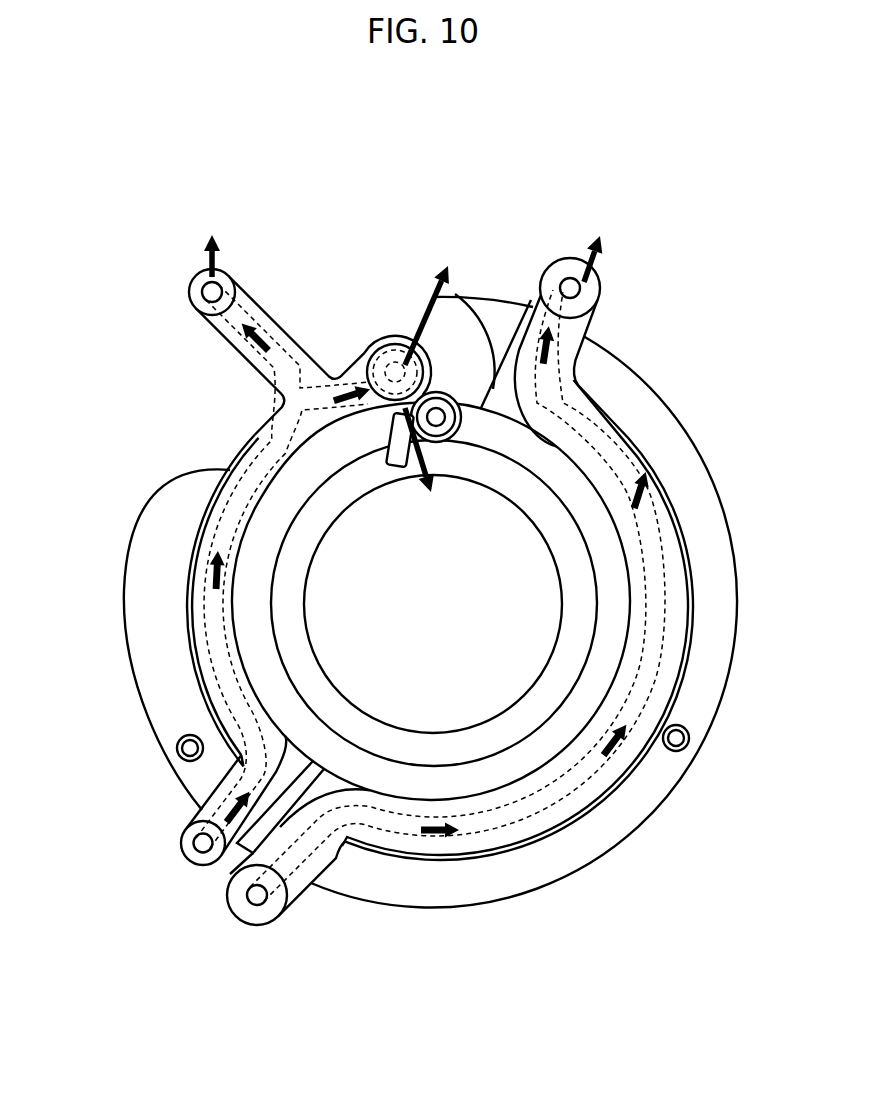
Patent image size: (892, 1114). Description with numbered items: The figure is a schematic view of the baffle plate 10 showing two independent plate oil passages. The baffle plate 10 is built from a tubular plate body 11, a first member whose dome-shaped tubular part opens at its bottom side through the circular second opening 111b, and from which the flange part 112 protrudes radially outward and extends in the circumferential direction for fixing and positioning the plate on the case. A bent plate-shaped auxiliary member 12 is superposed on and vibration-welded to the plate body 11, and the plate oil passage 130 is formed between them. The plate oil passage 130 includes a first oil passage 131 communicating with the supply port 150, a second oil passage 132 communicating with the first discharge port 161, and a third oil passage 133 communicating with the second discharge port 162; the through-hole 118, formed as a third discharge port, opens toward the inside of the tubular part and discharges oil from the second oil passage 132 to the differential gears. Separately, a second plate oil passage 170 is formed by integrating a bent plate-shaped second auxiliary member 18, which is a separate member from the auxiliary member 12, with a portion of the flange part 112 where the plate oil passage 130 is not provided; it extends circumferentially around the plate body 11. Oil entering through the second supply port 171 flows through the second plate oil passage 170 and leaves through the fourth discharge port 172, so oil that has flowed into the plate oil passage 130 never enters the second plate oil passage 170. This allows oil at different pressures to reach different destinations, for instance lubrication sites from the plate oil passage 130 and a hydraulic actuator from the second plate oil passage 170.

The baffle plate 10 is at (730, 290).
The plate body 11 is at (667, 390).
The auxiliary member 12 is at (247, 430).
The second auxiliary member 18 is at (692, 644).
The second opening 111b is at (505, 783).
The flange part 112 is at (678, 437).
The through-hole 118 is at (378, 398).
The plate oil passage 130 is at (242, 463).
The first oil passage 131 is at (203, 614).
The second oil passage 132 is at (378, 345).
The third oil passage 133 is at (265, 330).
The supply port 150 is at (195, 850).
The first discharge port 161 is at (396, 340).
The second discharge port 162 is at (203, 283).
The second plate oil passage 170 is at (669, 550).
The second supply port 171 is at (257, 907).
The fourth discharge port 172 is at (582, 287).